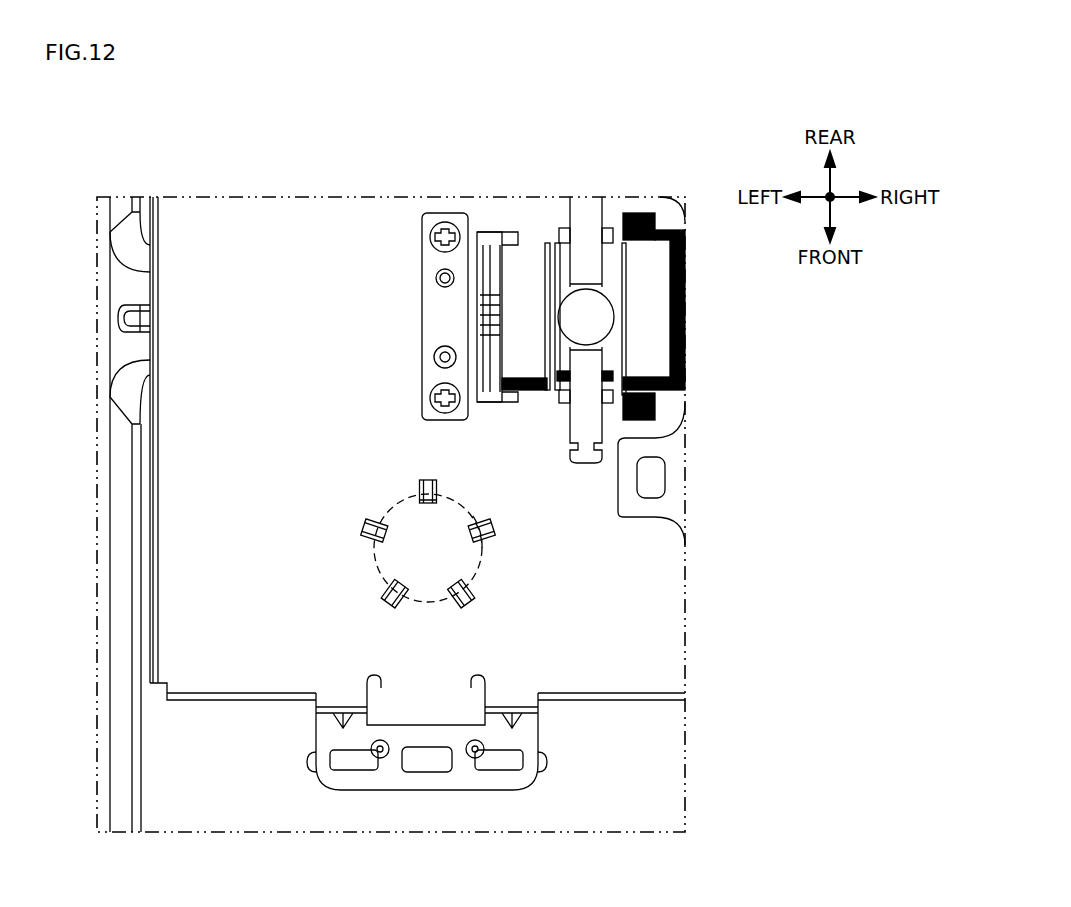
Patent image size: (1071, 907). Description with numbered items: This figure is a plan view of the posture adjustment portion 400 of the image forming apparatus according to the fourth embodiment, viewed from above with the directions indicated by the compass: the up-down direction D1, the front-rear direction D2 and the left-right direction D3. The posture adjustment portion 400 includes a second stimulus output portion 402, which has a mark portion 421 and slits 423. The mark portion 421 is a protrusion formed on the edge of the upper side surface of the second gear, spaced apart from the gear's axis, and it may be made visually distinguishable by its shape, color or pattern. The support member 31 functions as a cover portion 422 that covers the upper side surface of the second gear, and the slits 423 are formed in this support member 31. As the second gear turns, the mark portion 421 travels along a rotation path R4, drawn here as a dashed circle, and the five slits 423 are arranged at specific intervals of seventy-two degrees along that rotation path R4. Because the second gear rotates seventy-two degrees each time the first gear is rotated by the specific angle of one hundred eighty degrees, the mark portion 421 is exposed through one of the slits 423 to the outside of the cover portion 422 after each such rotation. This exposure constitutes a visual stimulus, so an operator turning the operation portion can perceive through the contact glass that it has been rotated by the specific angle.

The support member 31 is at (281, 252).
The cover portion 422 is at (553, 371).
The posture adjustment portion 400 is at (270, 712).
The second stimulus output portion 402 is at (338, 408).
The mark portion 421 is at (432, 488).
The slits 423 is at (421, 485).
The rotation path R4 is at (488, 556).
The up-down direction D1 is at (828, 199).
The front-rear direction D2 is at (832, 181).
The left-right direction D3 is at (845, 199).